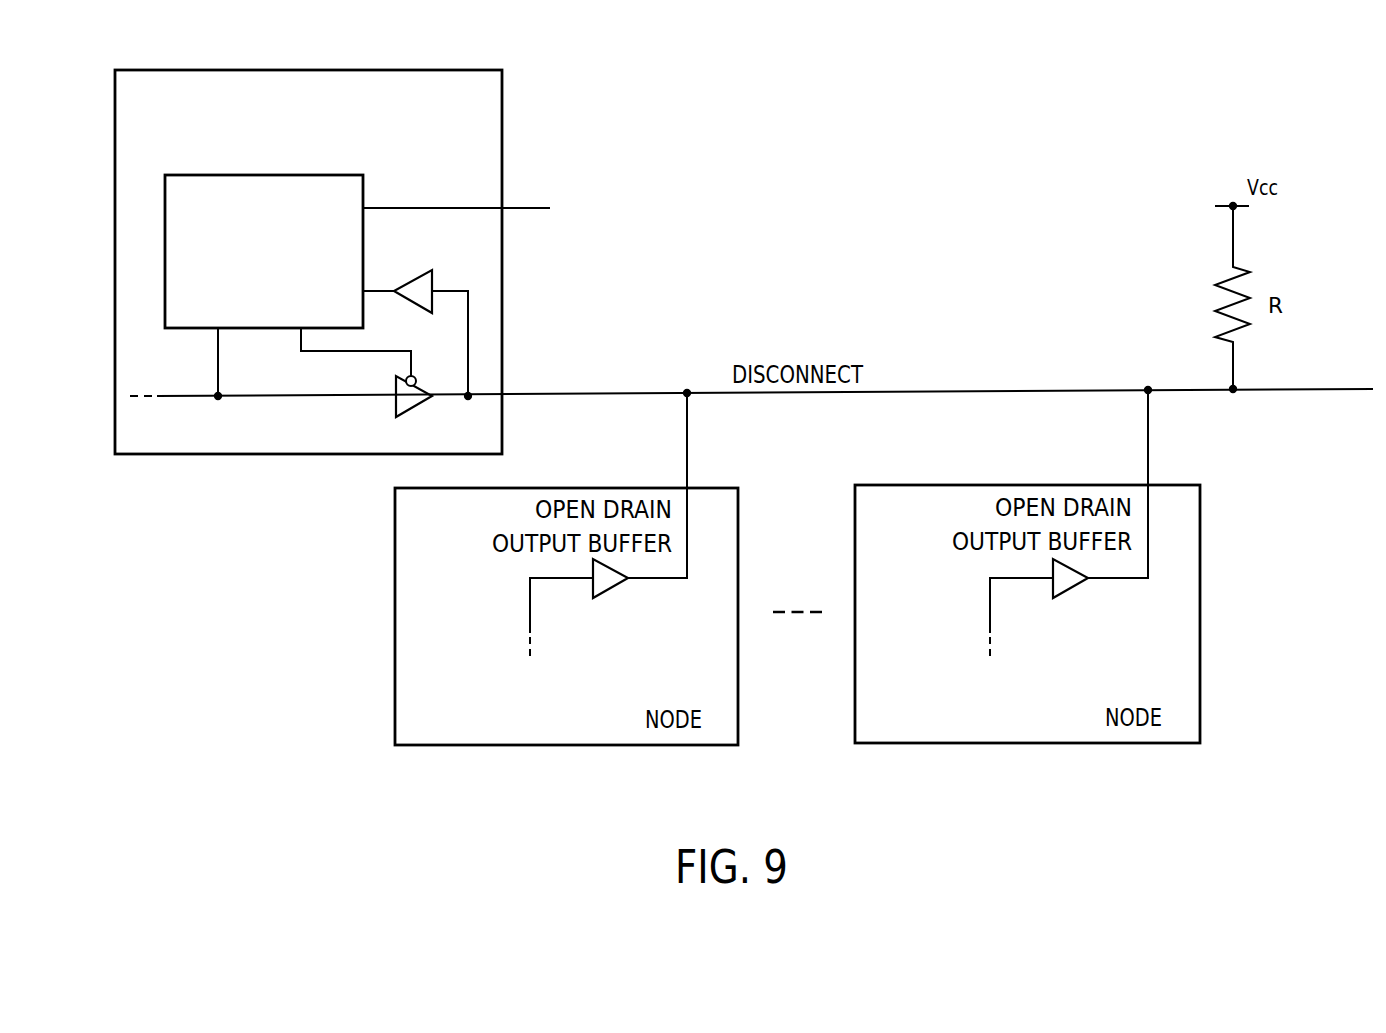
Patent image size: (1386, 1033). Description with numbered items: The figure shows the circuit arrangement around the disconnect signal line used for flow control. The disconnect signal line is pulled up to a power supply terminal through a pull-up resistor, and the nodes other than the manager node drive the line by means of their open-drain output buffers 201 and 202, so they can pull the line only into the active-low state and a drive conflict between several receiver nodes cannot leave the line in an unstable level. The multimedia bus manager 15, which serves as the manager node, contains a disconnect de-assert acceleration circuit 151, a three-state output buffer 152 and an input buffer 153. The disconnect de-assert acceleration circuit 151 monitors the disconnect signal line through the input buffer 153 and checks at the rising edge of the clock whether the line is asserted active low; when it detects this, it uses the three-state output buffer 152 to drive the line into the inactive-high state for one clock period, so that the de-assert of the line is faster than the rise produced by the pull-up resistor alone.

The multimedia bus manager 15 is at (357, 262).
The disconnect de-assert acceleration circuit 151 is at (363, 197).
The 3-state output buffer 152 is at (418, 403).
The input buffer 153 is at (412, 280).
The open-drain output buffer 201 is at (610, 589).
The open-drain output buffer 202 is at (1070, 589).